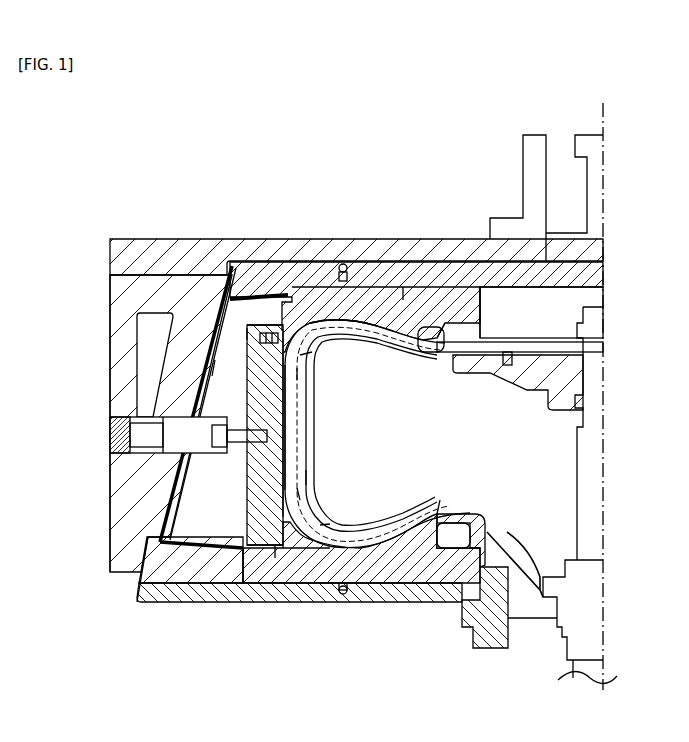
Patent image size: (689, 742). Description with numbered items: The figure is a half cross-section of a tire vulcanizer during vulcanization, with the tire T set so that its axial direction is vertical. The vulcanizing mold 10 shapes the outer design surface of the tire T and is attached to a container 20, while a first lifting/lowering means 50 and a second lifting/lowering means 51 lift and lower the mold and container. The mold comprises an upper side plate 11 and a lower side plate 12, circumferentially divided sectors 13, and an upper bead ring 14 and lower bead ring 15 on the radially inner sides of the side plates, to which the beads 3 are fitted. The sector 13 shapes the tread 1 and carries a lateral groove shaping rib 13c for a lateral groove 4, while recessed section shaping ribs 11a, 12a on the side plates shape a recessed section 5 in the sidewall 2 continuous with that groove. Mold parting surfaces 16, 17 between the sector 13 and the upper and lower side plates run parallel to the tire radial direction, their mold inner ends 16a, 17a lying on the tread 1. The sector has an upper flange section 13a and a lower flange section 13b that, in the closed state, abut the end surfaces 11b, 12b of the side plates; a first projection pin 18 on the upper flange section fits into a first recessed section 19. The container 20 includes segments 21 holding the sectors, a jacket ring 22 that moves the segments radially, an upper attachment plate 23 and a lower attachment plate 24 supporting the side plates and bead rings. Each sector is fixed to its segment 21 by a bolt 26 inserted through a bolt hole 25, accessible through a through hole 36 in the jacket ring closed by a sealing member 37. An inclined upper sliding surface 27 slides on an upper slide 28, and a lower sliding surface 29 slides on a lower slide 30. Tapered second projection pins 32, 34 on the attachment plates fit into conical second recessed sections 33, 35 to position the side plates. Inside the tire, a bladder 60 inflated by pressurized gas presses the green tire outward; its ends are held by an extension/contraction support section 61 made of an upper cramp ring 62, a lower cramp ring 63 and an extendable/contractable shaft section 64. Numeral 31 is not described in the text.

The tread 1 is at (316, 438).
The sidewall 2 is at (380, 330).
The bead 3 is at (432, 352).
The lateral groove 4 is at (300, 470).
The recessed section 5 is at (312, 352).
The vulcanizing mold 10 is at (487, 320).
The upper side plate 11 is at (443, 278).
The recessed section shaping rib 11a is at (312, 300).
The end surface 11b is at (240, 301).
The lower side plate 12 is at (375, 565).
The recessed section shaping rib 12a is at (292, 556).
The end surface 12b is at (246, 590).
The sector 13 is at (205, 526).
The upper flange section 13a is at (245, 320).
The lower flange section 13b is at (266, 548).
The lateral groove shaping rib 13c is at (290, 405).
The upper bead ring 14 is at (470, 300).
The lower bead ring 15 is at (462, 527).
The mold parting surface 16 is at (316, 392).
The mold inner end 16a is at (318, 380).
The mold parting surface 17 is at (337, 481).
The mold inner end 17a is at (324, 502).
The first projection pin 18 is at (150, 335).
The first recessed section 19 is at (243, 320).
The container 20 is at (95, 272).
The segment 21 is at (200, 487).
The jacket ring 22 is at (118, 299).
The upper attachment plate 23 is at (418, 285).
The lower attachment plate 24 is at (400, 600).
The bolt hole 25 is at (210, 380).
The bolt 26 is at (215, 430).
The upper sliding surface 27 is at (268, 332).
The upper slide 28 is at (276, 332).
The lower sliding surface 29 is at (193, 575).
The lower slide 30 is at (175, 572).
The bolt housing 31 is at (160, 455).
The second projection pin 32 is at (342, 262).
The second recessed section 33 is at (350, 274).
The second projection pin 34 is at (344, 598).
The second recessed section 35 is at (340, 594).
The through hole 36 is at (140, 425).
The sealing member 37 is at (112, 432).
The first lifting/lowering means 50 is at (590, 143).
The second lifting/lowering means 51 is at (537, 145).
The bladder 60 is at (478, 354).
The extension/contraction support section 61 is at (592, 612).
The upper cramp ring 62 is at (565, 373).
The lower cramp ring 63 is at (530, 605).
The extendable/contractable shaft section 64 is at (585, 478).
The tire T is at (395, 345).